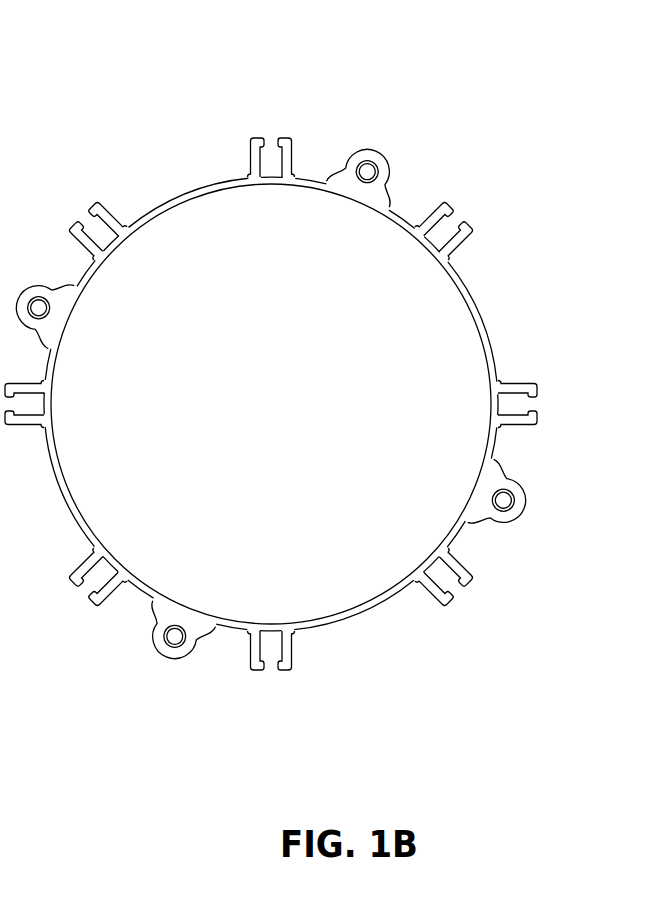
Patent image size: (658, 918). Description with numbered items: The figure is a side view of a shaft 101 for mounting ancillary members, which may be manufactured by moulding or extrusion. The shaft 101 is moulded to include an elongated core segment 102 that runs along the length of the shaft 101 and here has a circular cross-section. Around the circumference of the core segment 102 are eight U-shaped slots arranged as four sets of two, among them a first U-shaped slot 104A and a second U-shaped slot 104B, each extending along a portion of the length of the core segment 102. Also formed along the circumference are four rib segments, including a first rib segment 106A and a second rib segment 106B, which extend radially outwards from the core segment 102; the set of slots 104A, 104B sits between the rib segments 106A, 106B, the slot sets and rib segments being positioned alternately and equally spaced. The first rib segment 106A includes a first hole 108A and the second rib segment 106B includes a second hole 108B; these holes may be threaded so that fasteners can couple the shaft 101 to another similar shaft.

The shaft 101 is at (482, 58).
The elongated core segment 102 is at (152, 210).
The first U-shaped slot 104A is at (287, 672).
The second U-shaped slot 104B is at (444, 604).
The first rib segment 106A is at (155, 647).
The second rib segment 106B is at (512, 523).
The first hole 108A is at (175, 636).
The second hole 108B is at (503, 500).